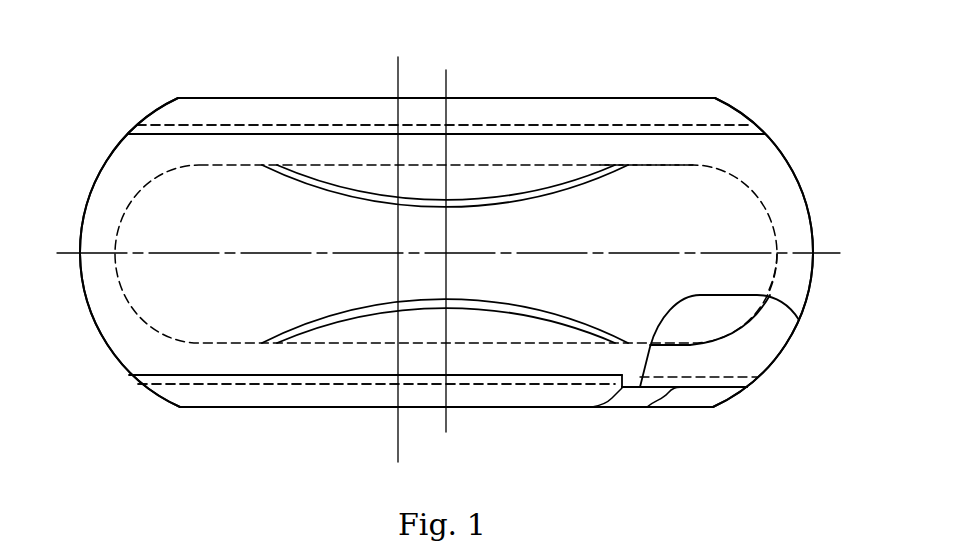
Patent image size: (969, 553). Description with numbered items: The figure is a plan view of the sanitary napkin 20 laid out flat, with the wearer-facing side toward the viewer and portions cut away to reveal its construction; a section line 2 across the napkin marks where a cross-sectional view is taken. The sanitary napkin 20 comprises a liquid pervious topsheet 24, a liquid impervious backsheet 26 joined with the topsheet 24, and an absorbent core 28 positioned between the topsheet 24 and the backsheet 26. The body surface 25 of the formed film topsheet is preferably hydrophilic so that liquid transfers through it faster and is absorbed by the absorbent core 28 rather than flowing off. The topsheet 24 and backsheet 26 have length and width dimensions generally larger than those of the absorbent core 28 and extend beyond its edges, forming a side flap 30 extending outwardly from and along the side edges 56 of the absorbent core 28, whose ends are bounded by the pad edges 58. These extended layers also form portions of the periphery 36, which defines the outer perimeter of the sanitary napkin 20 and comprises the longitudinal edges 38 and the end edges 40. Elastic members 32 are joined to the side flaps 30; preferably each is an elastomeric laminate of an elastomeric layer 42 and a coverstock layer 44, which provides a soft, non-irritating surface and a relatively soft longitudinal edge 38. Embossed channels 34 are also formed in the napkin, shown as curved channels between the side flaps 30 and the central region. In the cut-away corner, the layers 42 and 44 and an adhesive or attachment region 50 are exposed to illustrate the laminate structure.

The sanitary napkin 20 is at (172, 91).
The liquid pervious topsheet 24 is at (703, 228).
The body surface of the formed film topsheet 25 is at (767, 275).
The liquid impervious backsheet 26 is at (773, 337).
The absorbent core 28 is at (733, 323).
The side flap 30 is at (510, 141).
The elastic members 32 is at (575, 115).
The embossed channels 34 is at (552, 199).
The periphery 36 is at (771, 130).
The longitudinal edges 38 is at (290, 98).
The end edges 40 is at (83, 217).
The elastomeric layer 42 is at (630, 397).
The coverstock layer 44 is at (588, 404).
The adhesive layer 50 is at (645, 116).
The side edges of the absorbent core 56 is at (659, 163).
The pad edges of the absorbent core 58 is at (742, 185).
The section line 2- 2 is at (405, 68).